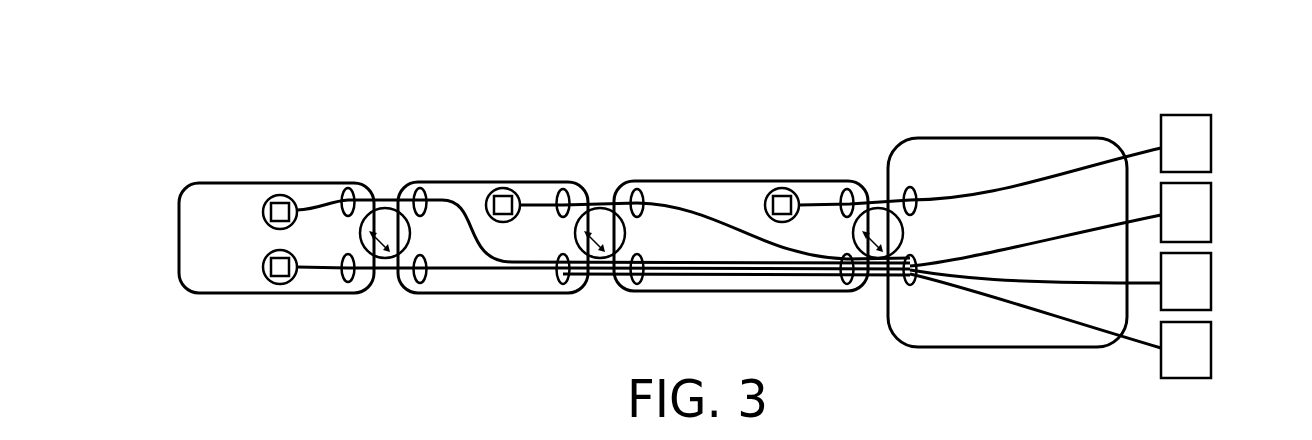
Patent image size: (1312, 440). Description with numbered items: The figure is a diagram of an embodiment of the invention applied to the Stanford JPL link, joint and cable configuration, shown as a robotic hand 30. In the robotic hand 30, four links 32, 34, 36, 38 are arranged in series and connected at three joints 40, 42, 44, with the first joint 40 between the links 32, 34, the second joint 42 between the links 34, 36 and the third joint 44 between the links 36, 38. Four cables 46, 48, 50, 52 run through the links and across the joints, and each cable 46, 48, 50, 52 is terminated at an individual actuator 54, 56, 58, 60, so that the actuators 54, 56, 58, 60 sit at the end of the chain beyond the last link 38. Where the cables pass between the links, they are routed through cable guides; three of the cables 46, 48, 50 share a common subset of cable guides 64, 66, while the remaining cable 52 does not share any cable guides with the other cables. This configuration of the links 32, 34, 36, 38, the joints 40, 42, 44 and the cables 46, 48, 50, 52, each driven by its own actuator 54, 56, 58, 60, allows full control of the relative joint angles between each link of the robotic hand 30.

The robotic hand 30 is at (727, 222).
The link 32 is at (242, 193).
The link 34 is at (463, 190).
The link 36 is at (705, 193).
The link 38 is at (982, 162).
The joint 40 is at (383, 230).
The joint 42 is at (600, 228).
The joint 44 is at (877, 228).
The cable 46 is at (970, 296).
The cable 48 is at (1003, 285).
The cable 50 is at (1033, 240).
The cable 52 is at (1063, 177).
The actuator 54 is at (1188, 352).
The actuator 56 is at (1188, 282).
The actuator 58 is at (1192, 210).
The actuator 60 is at (1190, 138).
The cable guide 64 is at (832, 280).
The cable guide 66 is at (562, 284).